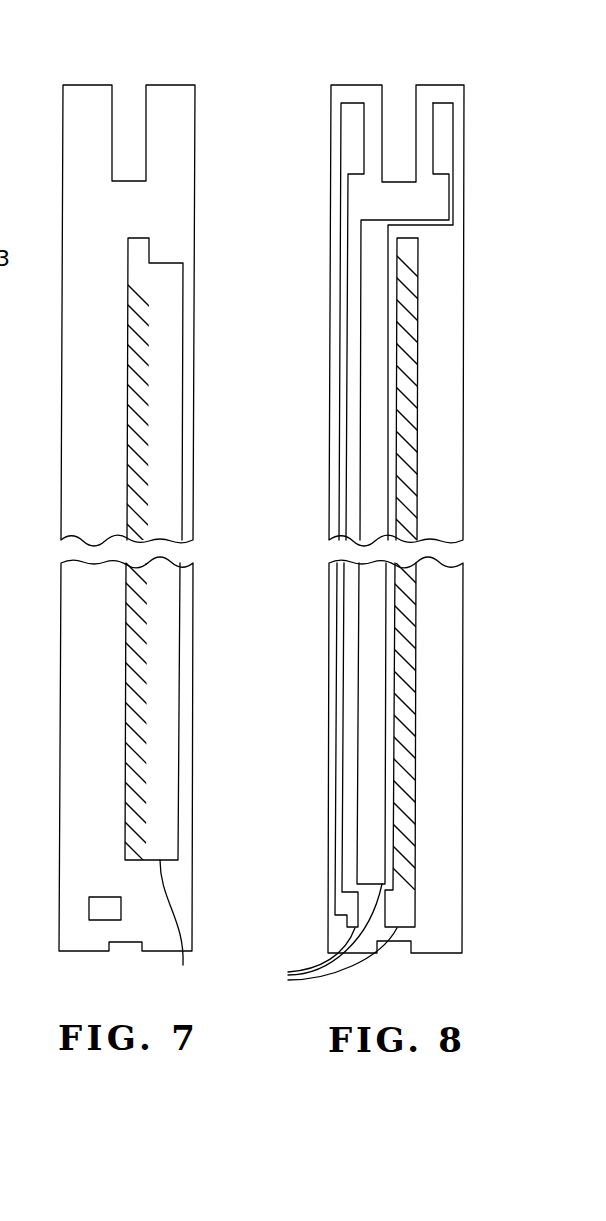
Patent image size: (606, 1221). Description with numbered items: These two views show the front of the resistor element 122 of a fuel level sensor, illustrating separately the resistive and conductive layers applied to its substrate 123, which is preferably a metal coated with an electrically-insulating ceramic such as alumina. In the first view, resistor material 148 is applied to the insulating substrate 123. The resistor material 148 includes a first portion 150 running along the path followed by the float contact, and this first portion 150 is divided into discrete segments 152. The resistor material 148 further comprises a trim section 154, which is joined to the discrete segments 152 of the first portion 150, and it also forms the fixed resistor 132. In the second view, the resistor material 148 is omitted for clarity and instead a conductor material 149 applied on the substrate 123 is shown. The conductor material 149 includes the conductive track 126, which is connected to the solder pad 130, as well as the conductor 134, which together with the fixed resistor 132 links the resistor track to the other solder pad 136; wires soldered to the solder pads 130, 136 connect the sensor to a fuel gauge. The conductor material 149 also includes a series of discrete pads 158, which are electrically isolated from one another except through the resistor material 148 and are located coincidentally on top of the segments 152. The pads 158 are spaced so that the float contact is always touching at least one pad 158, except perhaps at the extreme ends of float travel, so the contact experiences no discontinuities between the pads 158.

In FIG. 7, the resistor element 122 is at (63, 187).
In FIG. 8, the resistor element 122 is at (330, 297).
In FIG. 7, the substrate 123 is at (197, 154).
In FIG. 8, the substrate 123 is at (467, 222).
In FIG. 8, the conductive track 126 is at (360, 337).
In FIG. 8, the solder pad 130 is at (448, 122).
In FIG. 7, the fixed resistor 132 is at (103, 920).
In FIG. 8, the conductor 134 is at (338, 461).
In FIG. 8, the solder pad 136 is at (345, 117).
In FIG. 7, the resistor material 148 is at (181, 926).
In FIG. 8, the conductor material 149 is at (322, 936).
In FIG. 7, the first portion 150 is at (143, 237).
In FIG. 7, the discrete segments 152 is at (128, 429).
In FIG. 7, the trim section 154 is at (162, 263).
In FIG. 8, the discrete pads 158 is at (418, 369).